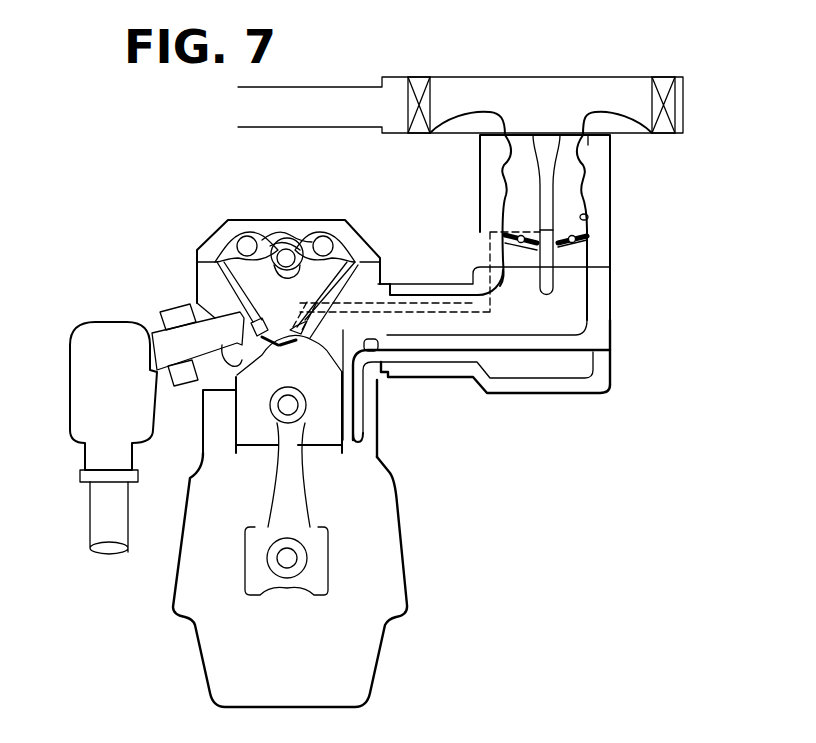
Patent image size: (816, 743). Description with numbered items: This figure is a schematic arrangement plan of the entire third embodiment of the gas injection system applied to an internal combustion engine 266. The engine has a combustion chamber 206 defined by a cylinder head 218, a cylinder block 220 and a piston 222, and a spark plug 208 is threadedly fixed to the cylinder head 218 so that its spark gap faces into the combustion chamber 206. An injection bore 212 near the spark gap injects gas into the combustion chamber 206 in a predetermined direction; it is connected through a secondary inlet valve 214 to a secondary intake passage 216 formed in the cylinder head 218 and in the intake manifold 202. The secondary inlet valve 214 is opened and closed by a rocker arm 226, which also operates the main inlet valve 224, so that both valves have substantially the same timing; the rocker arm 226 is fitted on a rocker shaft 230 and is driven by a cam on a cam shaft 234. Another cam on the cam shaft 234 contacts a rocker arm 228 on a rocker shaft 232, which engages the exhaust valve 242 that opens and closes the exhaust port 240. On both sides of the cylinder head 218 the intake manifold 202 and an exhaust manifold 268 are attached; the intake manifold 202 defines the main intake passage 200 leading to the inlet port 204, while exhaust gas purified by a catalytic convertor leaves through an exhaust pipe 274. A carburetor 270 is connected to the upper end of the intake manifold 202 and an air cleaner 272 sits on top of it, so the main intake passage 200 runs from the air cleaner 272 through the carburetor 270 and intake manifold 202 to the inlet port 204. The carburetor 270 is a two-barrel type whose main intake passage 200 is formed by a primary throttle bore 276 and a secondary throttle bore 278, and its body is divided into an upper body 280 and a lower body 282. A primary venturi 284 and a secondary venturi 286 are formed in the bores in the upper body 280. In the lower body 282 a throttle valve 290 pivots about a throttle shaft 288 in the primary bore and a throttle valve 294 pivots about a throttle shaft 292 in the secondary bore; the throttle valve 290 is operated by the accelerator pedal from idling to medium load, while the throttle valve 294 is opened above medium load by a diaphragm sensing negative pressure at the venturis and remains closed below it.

The main intake passage 200 is at (458, 333).
The intake manifold 202 is at (612, 338).
The inlet port 204 is at (387, 343).
The combustion chamber 206 is at (278, 378).
The spark plug 208 is at (198, 346).
The injection bore 212 is at (285, 370).
The secondary inlet valve 214 is at (342, 262).
The secondary intake passage 216 is at (428, 278).
The cylinder head 218 is at (382, 262).
The cylinder block 220 is at (378, 435).
The piston 222 is at (365, 415).
The main inlet valve 224 is at (352, 295).
The rocker arm 226 is at (297, 232).
The rocker arm 228 is at (248, 232).
The rocker shaft 230 is at (328, 232).
The rocker shaft 232 is at (242, 242).
The cam shaft 234 is at (283, 267).
The exhaust port 240 is at (172, 312).
The exhaust valve 242 is at (210, 280).
The engine 266 is at (357, 236).
The exhaust manifold 268 is at (170, 375).
The carburetor 270 is at (612, 203).
The air cleaner 272 is at (592, 76).
The exhaust pipe 274 is at (90, 508).
The primary throttle bore 276 is at (588, 217).
The secondary throttle bore 278 is at (506, 178).
The upper body 280 is at (610, 147).
The lower body 282 is at (610, 253).
The primary venturi 284 is at (610, 172).
The secondary venturi 286 is at (505, 152).
The throttle shaft 288 is at (574, 247).
The throttle valve 290 is at (577, 243).
The throttle shaft 292 is at (518, 247).
The throttle valve 294 is at (512, 232).